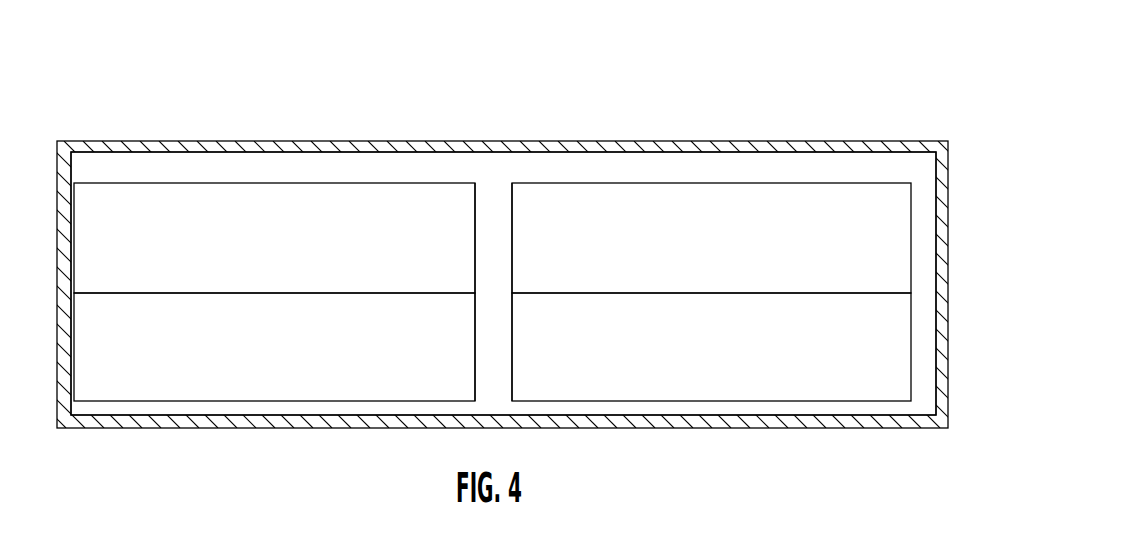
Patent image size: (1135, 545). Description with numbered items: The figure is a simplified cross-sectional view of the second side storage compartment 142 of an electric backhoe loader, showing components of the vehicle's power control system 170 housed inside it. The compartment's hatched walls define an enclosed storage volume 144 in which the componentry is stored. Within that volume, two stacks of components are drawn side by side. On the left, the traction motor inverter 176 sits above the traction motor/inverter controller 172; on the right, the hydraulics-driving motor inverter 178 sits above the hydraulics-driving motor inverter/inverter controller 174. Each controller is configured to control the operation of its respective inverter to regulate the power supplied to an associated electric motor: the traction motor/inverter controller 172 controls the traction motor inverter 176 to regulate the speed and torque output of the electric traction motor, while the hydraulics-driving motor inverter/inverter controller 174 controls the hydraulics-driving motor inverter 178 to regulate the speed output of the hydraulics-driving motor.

The second side storage compartment 142 is at (567, 226).
The power control system 170 is at (489, 255).
The enclosed storage volume 144 is at (455, 247).
The traction motor inverter 176 is at (274, 238).
The traction motor/inverter controller 172 is at (274, 347).
The hydraulics-driving motor inverter 178 is at (711, 238).
The hydraulics-driving motor inverter/inverter controller 174 is at (711, 347).